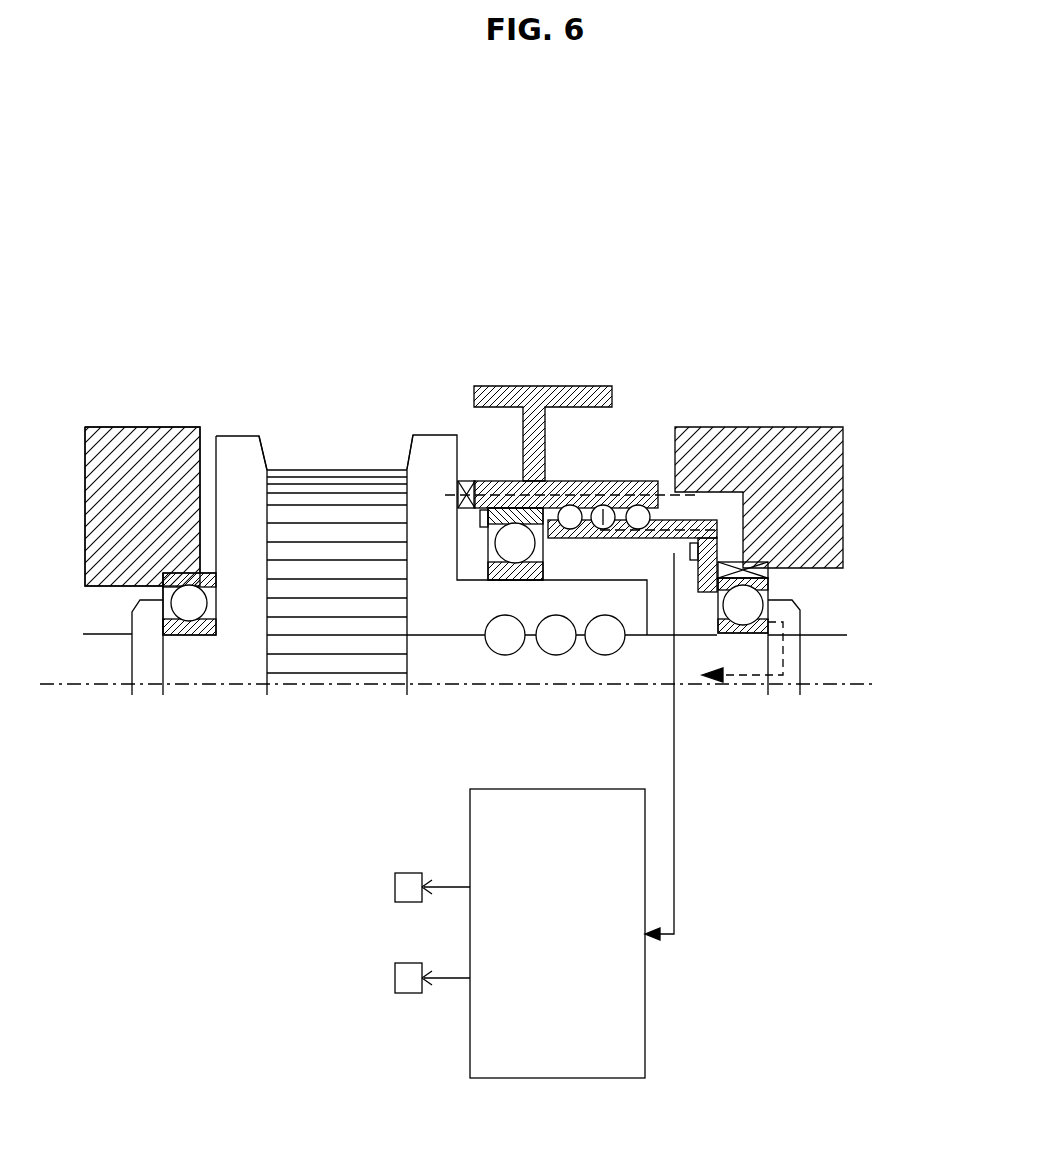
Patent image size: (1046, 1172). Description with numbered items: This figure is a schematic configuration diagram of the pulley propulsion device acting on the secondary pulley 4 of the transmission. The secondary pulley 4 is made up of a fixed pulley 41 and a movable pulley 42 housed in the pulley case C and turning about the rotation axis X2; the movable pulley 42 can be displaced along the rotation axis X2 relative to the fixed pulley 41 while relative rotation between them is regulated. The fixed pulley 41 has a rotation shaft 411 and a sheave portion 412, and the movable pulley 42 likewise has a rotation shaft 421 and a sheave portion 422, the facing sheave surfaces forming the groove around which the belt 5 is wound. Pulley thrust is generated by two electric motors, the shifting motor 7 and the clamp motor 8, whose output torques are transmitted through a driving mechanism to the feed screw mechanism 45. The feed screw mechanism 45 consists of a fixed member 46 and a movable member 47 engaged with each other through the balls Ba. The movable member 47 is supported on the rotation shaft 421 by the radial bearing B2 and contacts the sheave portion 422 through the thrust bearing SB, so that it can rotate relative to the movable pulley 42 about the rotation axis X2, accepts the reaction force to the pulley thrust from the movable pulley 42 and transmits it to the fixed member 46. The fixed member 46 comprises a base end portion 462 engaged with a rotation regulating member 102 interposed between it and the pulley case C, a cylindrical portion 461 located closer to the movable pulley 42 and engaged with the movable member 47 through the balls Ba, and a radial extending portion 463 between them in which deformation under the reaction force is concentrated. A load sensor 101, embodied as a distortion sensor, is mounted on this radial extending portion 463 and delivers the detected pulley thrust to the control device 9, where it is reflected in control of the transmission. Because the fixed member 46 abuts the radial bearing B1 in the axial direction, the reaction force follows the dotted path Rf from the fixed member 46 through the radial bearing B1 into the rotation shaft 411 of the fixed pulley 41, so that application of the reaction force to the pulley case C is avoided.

The secondary pulley 4 is at (738, 318).
The fixed pulley 41 is at (243, 435).
The rotation shaft 411 is at (105, 675).
The sheave portion 412 is at (262, 462).
The movable pulley 42 is at (440, 438).
The rotation shaft 421 is at (456, 617).
The sheave portion 422 is at (408, 448).
The feed screw mechanism 45 is at (657, 415).
The fixed member 46 is at (719, 528).
The cylindrical portion 461 is at (700, 517).
The base end portion 462 is at (763, 567).
The radial extending portion 463 is at (713, 553).
The movable member 47 is at (578, 385).
The belt 5 is at (345, 676).
The shifting motor 7 is at (395, 887).
The clamp motor 8 is at (395, 978).
The control device 9 is at (553, 1080).
The load sensor 101 is at (683, 557).
The rotation regulating member 102 is at (740, 572).
The radial bearing B1 is at (163, 592).
The radial bearing B2 is at (545, 565).
The ball Ba is at (638, 512).
The thrust bearing SB is at (468, 480).
The pulley case C is at (138, 428).
The transmission path of reaction force Rf is at (748, 678).
The rotation axis X2 is at (476, 684).